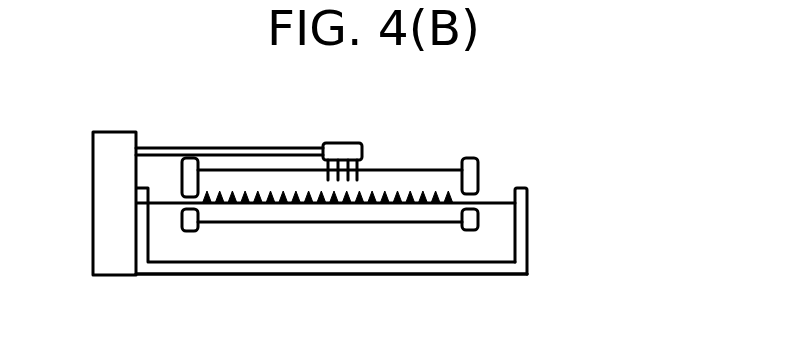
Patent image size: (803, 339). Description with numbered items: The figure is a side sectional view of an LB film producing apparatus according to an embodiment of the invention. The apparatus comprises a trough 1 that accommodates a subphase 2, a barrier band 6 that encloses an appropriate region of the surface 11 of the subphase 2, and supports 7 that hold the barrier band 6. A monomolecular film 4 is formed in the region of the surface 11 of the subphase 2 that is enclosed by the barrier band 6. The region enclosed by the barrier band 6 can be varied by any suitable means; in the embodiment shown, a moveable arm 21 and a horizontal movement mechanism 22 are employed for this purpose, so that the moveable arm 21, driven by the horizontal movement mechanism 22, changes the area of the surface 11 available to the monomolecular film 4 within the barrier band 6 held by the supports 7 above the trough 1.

The trough 1 is at (528, 231).
The subphase 2 is at (478, 253).
The monomolecular film 4 is at (373, 186).
The barrier band 6 is at (232, 178).
The supports 7 is at (187, 158).
The surface of the subphase 11 is at (503, 195).
The moveable arm 21 is at (344, 143).
The horizontal movement mechanism 22 is at (119, 131).